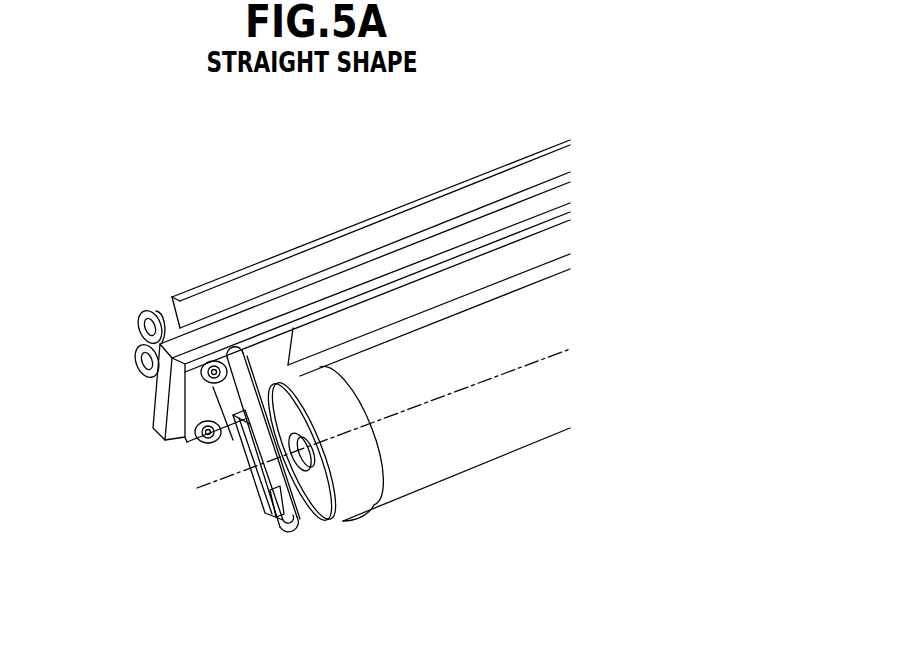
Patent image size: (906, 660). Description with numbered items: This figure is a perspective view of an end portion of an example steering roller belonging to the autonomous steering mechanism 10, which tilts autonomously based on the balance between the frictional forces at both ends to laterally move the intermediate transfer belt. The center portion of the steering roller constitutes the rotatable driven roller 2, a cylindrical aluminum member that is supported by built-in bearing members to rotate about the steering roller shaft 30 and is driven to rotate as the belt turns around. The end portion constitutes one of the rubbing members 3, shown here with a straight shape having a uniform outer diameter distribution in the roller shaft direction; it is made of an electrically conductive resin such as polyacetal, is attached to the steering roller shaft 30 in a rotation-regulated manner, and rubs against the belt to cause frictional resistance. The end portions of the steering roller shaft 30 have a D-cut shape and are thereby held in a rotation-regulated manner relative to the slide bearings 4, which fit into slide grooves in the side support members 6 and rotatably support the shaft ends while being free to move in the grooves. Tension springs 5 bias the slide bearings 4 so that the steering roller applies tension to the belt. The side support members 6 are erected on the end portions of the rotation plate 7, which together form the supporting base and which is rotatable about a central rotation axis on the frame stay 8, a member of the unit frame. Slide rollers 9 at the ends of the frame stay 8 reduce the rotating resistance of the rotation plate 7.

The autonomous steering mechanism 10 is at (346, 170).
The frame stay 8 is at (281, 272).
The rotation plate 7 is at (158, 406).
The slide rollers 9 is at (140, 348).
The tension springs 5 is at (205, 443).
The side support members 6 is at (289, 538).
The slide bearings 4 is at (258, 485).
The steering roller shaft 30 is at (333, 520).
The rubbing members 3 is at (358, 500).
The driven roller 2 is at (468, 455).